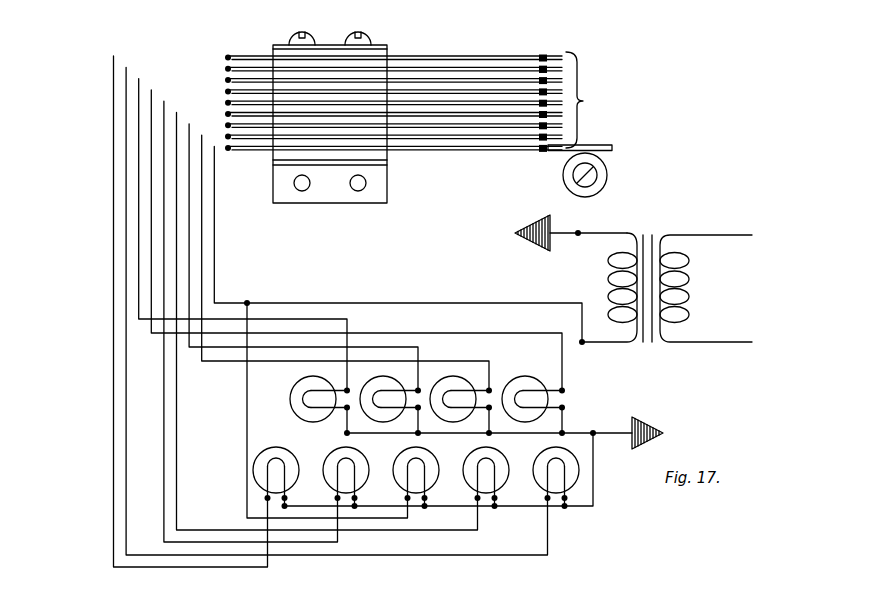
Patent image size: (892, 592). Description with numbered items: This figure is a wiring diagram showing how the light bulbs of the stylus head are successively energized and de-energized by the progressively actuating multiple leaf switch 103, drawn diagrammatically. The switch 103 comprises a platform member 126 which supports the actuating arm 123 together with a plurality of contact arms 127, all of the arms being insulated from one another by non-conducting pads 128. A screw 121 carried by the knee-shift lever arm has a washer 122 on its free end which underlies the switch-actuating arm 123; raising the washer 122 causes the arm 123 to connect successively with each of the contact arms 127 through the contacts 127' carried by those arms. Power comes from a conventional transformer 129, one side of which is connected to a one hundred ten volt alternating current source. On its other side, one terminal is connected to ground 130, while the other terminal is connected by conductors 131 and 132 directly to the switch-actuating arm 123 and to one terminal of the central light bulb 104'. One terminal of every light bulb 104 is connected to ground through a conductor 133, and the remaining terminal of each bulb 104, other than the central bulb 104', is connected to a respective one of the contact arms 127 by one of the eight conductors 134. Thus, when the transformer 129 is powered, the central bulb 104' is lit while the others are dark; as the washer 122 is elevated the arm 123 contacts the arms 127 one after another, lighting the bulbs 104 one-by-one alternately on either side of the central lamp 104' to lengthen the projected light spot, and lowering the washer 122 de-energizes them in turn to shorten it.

The multiple leaf switch 103 is at (409, 53).
The light bulb 104 is at (427, 416).
The central light bulb 104' is at (416, 501).
The screw 121 is at (597, 176).
The washer 122 is at (607, 182).
The actuating arm 123 is at (610, 147).
The platform member 126 is at (373, 204).
The contact arms 127 is at (587, 102).
The contacts 127' is at (526, 61).
The non-conducting pads 128 is at (382, 136).
The transformer 129 is at (674, 223).
The ground 130 is at (560, 233).
The conductor 131 is at (421, 304).
The conductor 132 is at (243, 405).
The conductor 133 is at (598, 432).
The conductors 134 is at (207, 233).